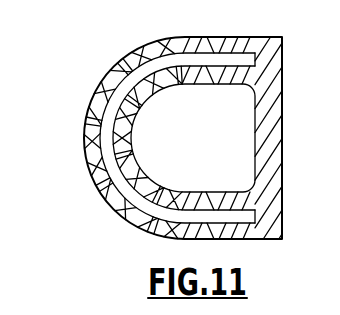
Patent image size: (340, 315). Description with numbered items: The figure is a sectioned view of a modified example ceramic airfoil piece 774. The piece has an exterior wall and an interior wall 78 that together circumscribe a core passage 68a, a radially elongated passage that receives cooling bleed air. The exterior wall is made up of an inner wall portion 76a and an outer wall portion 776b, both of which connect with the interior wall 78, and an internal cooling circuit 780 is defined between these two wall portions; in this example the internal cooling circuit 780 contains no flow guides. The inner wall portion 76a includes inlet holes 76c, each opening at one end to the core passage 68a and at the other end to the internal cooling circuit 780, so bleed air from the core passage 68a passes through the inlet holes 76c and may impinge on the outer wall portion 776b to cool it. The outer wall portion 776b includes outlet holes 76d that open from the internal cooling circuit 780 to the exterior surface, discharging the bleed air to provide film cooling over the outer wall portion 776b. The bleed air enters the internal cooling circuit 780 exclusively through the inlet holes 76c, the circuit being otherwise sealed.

The interior wall 78 is at (288, 144).
The ceramic airfoil piece 774 is at (76, 191).
The outer wall portion 776b is at (76, 148).
The internal cooling circuit 780 is at (106, 105).
The inner wall portion 76a is at (141, 146).
The inlet holes 76c is at (209, 174).
The outlet holes 76d is at (123, 208).
The core passage 68a is at (235, 155).